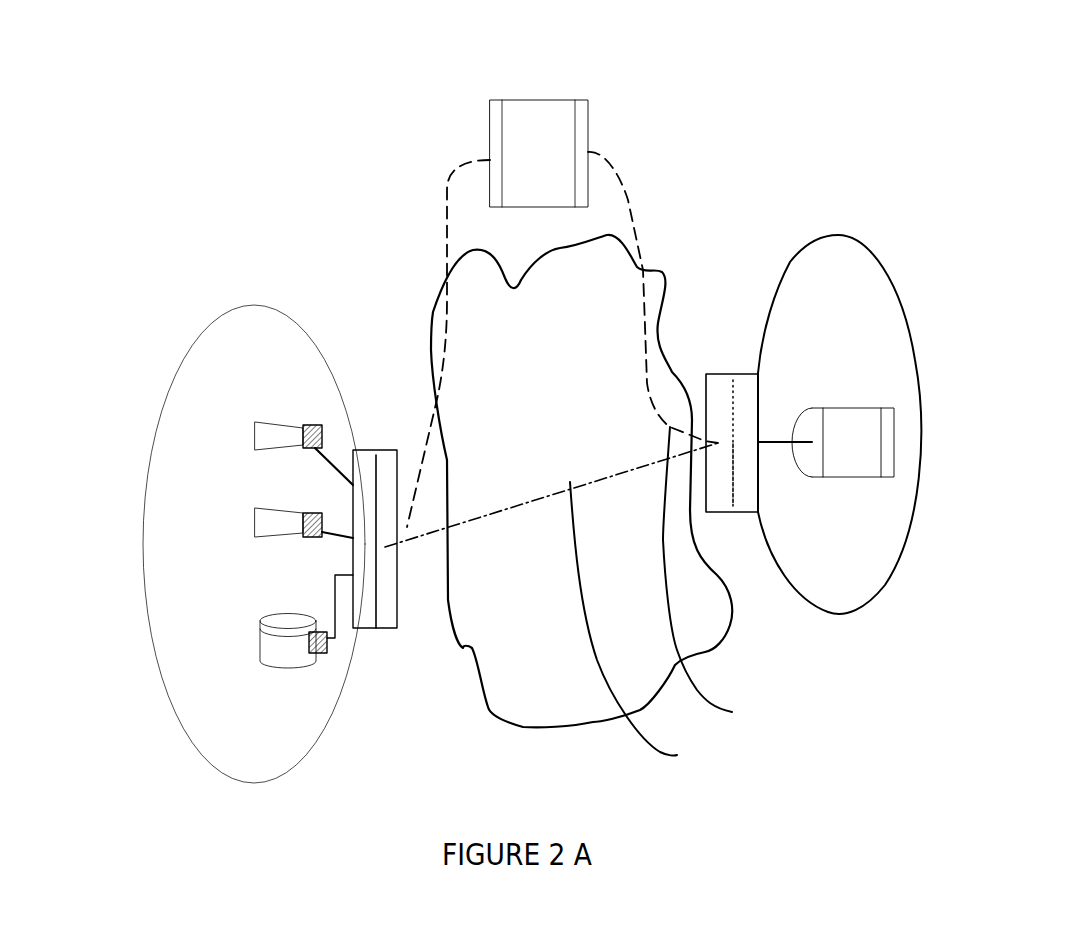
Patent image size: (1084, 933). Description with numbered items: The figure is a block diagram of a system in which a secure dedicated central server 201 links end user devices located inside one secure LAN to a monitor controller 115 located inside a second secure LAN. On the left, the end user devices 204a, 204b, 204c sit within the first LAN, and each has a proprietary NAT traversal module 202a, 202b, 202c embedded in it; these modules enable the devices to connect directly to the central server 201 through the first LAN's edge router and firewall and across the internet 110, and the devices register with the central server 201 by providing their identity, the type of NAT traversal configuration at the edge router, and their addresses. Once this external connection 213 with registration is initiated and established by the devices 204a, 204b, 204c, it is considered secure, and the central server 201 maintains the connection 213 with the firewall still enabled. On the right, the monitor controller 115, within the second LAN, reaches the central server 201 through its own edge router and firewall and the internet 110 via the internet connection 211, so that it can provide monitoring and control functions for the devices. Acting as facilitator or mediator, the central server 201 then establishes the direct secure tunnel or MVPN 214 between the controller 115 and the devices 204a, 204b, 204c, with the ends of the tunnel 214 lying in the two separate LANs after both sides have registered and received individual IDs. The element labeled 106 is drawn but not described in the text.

The central server 201 is at (538, 100).
The external connection 213 is at (447, 228).
The internet 110 is at (663, 312).
The internet connection 211 is at (712, 584).
The secure tunnel or MVPN 214 is at (641, 631).
The monitor controller 115 is at (848, 406).
The connector 106 is at (335, 638).
The end user device 204b is at (253, 437).
The NAT traversal module 202b is at (303, 425).
The end user device 204a is at (250, 522).
The NAT traversal module 202a is at (300, 527).
The end user device 204c is at (260, 635).
The NAT traversal module 202c is at (317, 653).